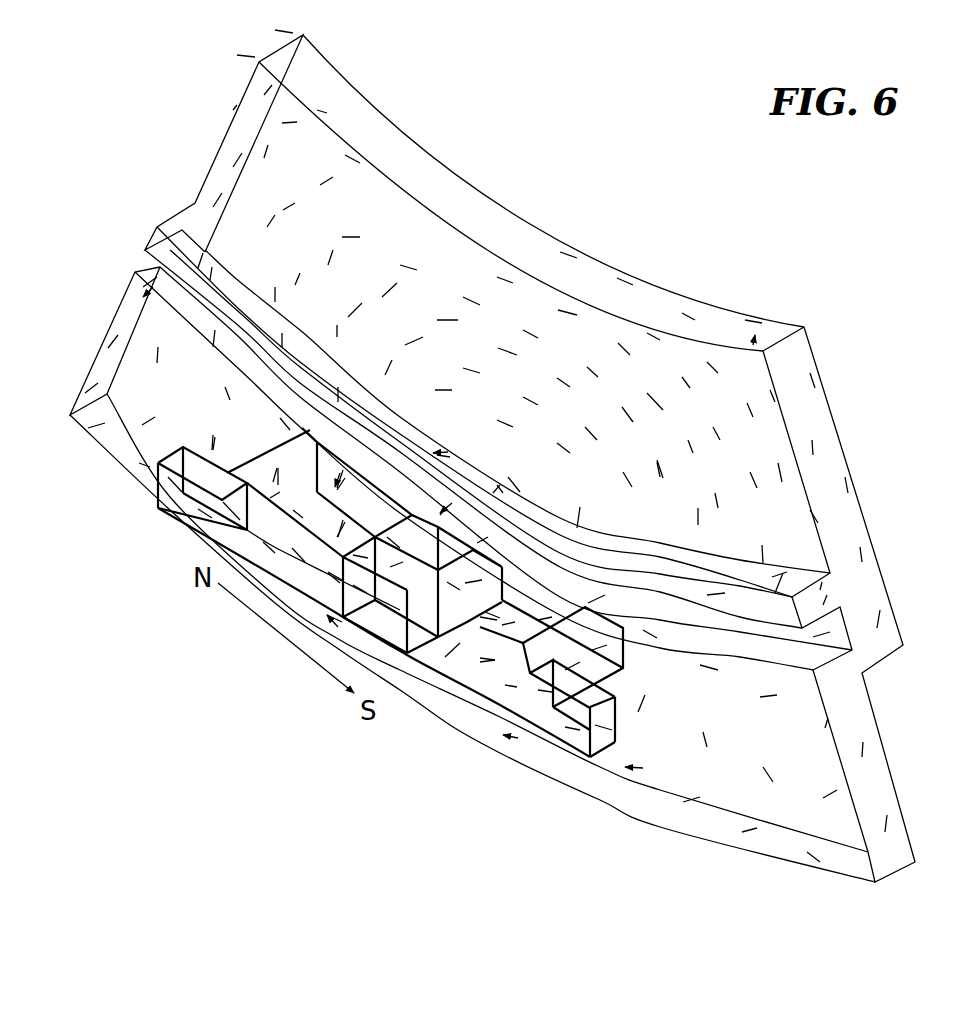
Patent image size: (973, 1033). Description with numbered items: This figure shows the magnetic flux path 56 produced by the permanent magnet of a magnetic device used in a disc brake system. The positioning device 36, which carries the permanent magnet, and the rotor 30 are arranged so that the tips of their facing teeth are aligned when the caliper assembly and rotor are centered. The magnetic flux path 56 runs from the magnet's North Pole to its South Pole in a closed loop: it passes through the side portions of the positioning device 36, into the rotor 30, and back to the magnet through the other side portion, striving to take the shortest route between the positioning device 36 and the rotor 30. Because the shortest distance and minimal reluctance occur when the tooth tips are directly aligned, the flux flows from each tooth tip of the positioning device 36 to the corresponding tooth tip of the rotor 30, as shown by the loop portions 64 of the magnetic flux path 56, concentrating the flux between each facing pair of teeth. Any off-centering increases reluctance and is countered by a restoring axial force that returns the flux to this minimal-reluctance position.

The rotor 30 is at (765, 349).
The positioning device 36 is at (517, 668).
The magnetic flux path 56 is at (440, 249).
The loop portions 64 is at (207, 422).